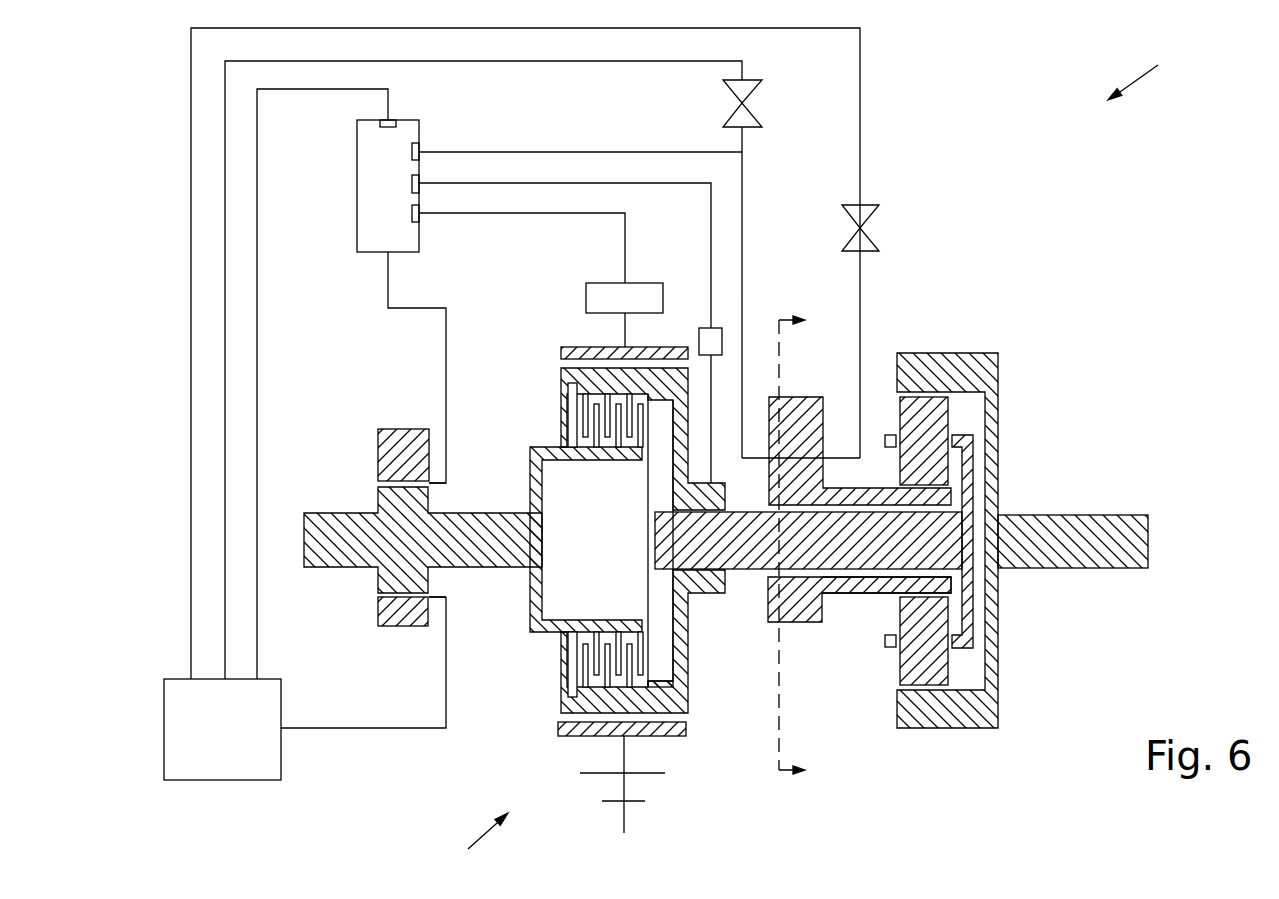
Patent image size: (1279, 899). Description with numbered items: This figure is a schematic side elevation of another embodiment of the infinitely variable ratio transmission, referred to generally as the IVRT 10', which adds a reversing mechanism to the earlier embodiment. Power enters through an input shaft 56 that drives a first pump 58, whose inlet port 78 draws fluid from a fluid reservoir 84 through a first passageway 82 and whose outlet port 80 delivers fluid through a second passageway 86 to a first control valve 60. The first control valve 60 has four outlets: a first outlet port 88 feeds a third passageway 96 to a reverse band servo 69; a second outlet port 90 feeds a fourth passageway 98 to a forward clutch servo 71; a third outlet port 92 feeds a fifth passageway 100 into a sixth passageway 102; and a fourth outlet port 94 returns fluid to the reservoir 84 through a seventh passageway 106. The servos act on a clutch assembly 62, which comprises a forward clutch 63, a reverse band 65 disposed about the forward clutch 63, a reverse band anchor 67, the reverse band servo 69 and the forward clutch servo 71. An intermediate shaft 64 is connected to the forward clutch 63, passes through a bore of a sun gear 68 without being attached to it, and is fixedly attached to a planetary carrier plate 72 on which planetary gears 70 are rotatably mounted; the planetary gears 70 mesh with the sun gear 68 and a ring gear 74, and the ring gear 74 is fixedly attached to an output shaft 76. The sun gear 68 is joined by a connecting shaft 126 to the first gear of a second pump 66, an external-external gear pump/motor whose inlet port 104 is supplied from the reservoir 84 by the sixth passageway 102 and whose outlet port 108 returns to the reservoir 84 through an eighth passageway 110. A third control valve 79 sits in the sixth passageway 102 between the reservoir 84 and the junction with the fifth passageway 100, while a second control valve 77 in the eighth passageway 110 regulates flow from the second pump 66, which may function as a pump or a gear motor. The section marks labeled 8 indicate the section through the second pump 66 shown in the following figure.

The IVRT 10' is at (1152, 76).
The input shaft 56 is at (345, 513).
The first pump 58 is at (378, 612).
The first control valve 60 is at (357, 200).
The clutch assembly 62 is at (576, 621).
The forward clutch 63 is at (561, 697).
The intermediate shaft 64 is at (742, 575).
The reverse band 65 is at (560, 350).
The second pump 66 is at (800, 396).
The reverse band anchor 67 is at (626, 818).
The sun gear 68 is at (880, 594).
The reverse band servo 69 is at (586, 292).
The planetary gear 70 is at (885, 405).
The forward clutch servo 71 is at (700, 328).
The planetary carrier plate 72 is at (968, 585).
The ring gear 74 is at (990, 350).
The output shaft 76 is at (1108, 513).
The second control valve 77 is at (872, 232).
The inlet port 78 is at (430, 597).
The third control valve 79 is at (735, 106).
The outlet port 80 is at (430, 483).
The first passageway 82 is at (446, 655).
The fluid reservoir 84 is at (209, 780).
The second passageway 86 is at (388, 281).
The first outlet port 88 is at (420, 215).
The second outlet port 90 is at (419, 178).
The third outlet port 92 is at (418, 145).
The fourth outlet port 94 is at (388, 121).
The third passageway 96 is at (583, 225).
The fourth passageway 98 is at (711, 218).
The fifth passageway 100 is at (690, 152).
The sixth passageway 102 is at (723, 54).
The inlet port 104 is at (750, 320).
The seventh passageway 106 is at (360, 89).
The outlet port 108 is at (822, 460).
The eighth passageway 110 is at (862, 52).
The connecting shaft 126 is at (835, 594).
The section line 8- 8 is at (809, 547).